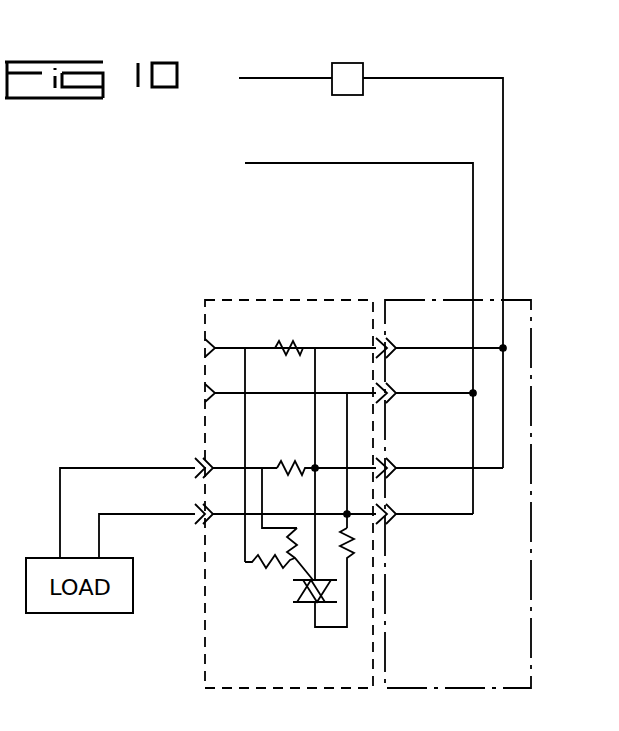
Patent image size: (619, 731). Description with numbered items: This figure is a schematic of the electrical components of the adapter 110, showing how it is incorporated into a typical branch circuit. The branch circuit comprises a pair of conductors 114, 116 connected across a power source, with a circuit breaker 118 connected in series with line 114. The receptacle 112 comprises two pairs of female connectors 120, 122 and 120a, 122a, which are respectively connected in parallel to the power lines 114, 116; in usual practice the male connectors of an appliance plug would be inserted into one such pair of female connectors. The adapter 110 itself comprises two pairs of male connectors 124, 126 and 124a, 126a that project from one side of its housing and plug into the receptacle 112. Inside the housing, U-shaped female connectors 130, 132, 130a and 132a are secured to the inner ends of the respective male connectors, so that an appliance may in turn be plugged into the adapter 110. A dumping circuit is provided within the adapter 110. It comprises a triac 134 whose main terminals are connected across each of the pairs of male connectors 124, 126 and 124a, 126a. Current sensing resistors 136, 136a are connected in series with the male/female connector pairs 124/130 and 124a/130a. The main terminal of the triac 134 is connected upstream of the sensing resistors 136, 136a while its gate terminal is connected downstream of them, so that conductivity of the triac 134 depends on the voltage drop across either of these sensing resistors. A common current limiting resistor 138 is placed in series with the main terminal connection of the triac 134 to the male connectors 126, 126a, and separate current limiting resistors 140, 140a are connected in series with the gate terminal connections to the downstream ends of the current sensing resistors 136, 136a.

The adapter 110 is at (268, 288).
The receptacle 112 is at (393, 298).
The conductor 114 is at (255, 79).
The conductor 116 is at (357, 162).
The circuit breaker 118 is at (364, 70).
The female connector 120 is at (413, 335).
The female connector 122 is at (393, 388).
The male connector 124 is at (375, 340).
The male connector 126 is at (375, 386).
The U-shaped female connector 130 is at (207, 344).
The U-shaped female connector 132 is at (207, 389).
The triac 134 is at (300, 603).
The current sensing resistor 136 is at (282, 344).
The common current limiting resistor 138 is at (350, 558).
The current limiting resistor 140 is at (257, 565).
The female connector 120a is at (392, 462).
The female connector 122a is at (392, 506).
The male connector 124a is at (382, 458).
The male connector 126a is at (384, 526).
The U-shaped female connector 130a is at (208, 458).
The U-shaped female connector 132a is at (205, 505).
The current sensing resistor 136a is at (290, 460).
The current limiting resistor 140a is at (290, 537).